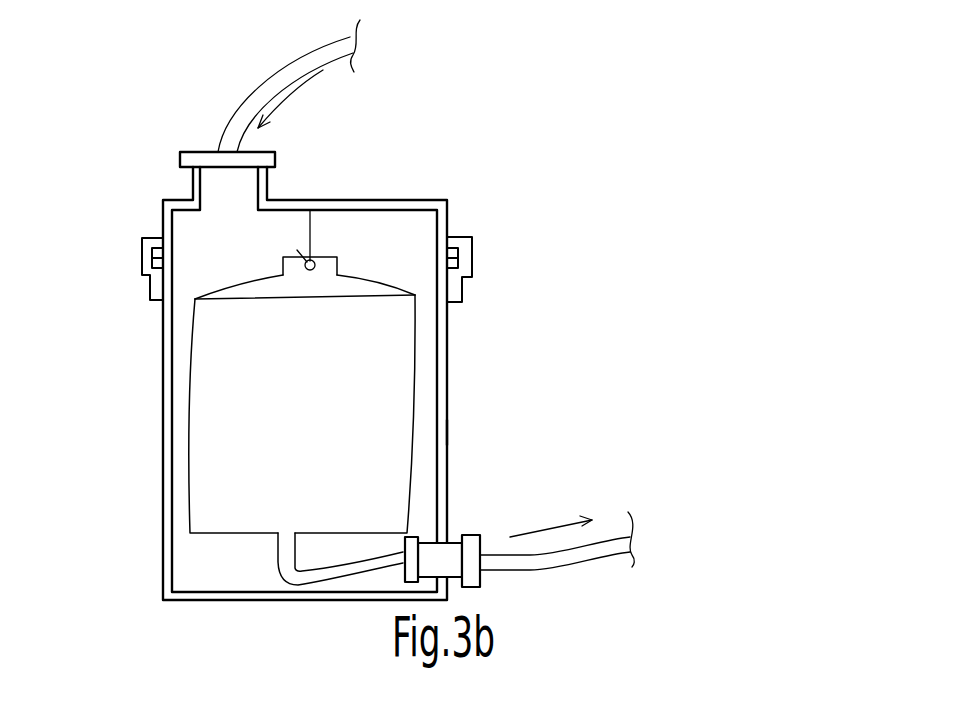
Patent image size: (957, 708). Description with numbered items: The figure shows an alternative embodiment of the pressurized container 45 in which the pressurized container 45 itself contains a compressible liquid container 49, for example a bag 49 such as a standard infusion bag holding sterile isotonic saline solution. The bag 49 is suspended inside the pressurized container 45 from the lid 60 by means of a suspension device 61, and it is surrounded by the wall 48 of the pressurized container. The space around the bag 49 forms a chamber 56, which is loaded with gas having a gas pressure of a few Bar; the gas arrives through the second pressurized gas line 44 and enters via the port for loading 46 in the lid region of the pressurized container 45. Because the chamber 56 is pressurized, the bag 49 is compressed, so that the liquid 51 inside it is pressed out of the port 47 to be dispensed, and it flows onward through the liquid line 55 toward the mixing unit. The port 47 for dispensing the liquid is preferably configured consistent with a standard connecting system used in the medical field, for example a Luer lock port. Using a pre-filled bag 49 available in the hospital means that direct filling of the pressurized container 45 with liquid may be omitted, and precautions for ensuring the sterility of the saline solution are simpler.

The second pressurized gas line 44 is at (262, 72).
The port for loading 46 is at (282, 172).
The suspension device 61 is at (322, 233).
The lid 60 is at (422, 198).
The chamber 56 is at (408, 259).
The pressurized container 45 is at (465, 362).
The liquid container 49 is at (225, 372).
The liquid 51 is at (238, 428).
The wall of the pressurized container 48 is at (447, 433).
The port 47 is at (453, 533).
The liquid line 55 is at (552, 558).